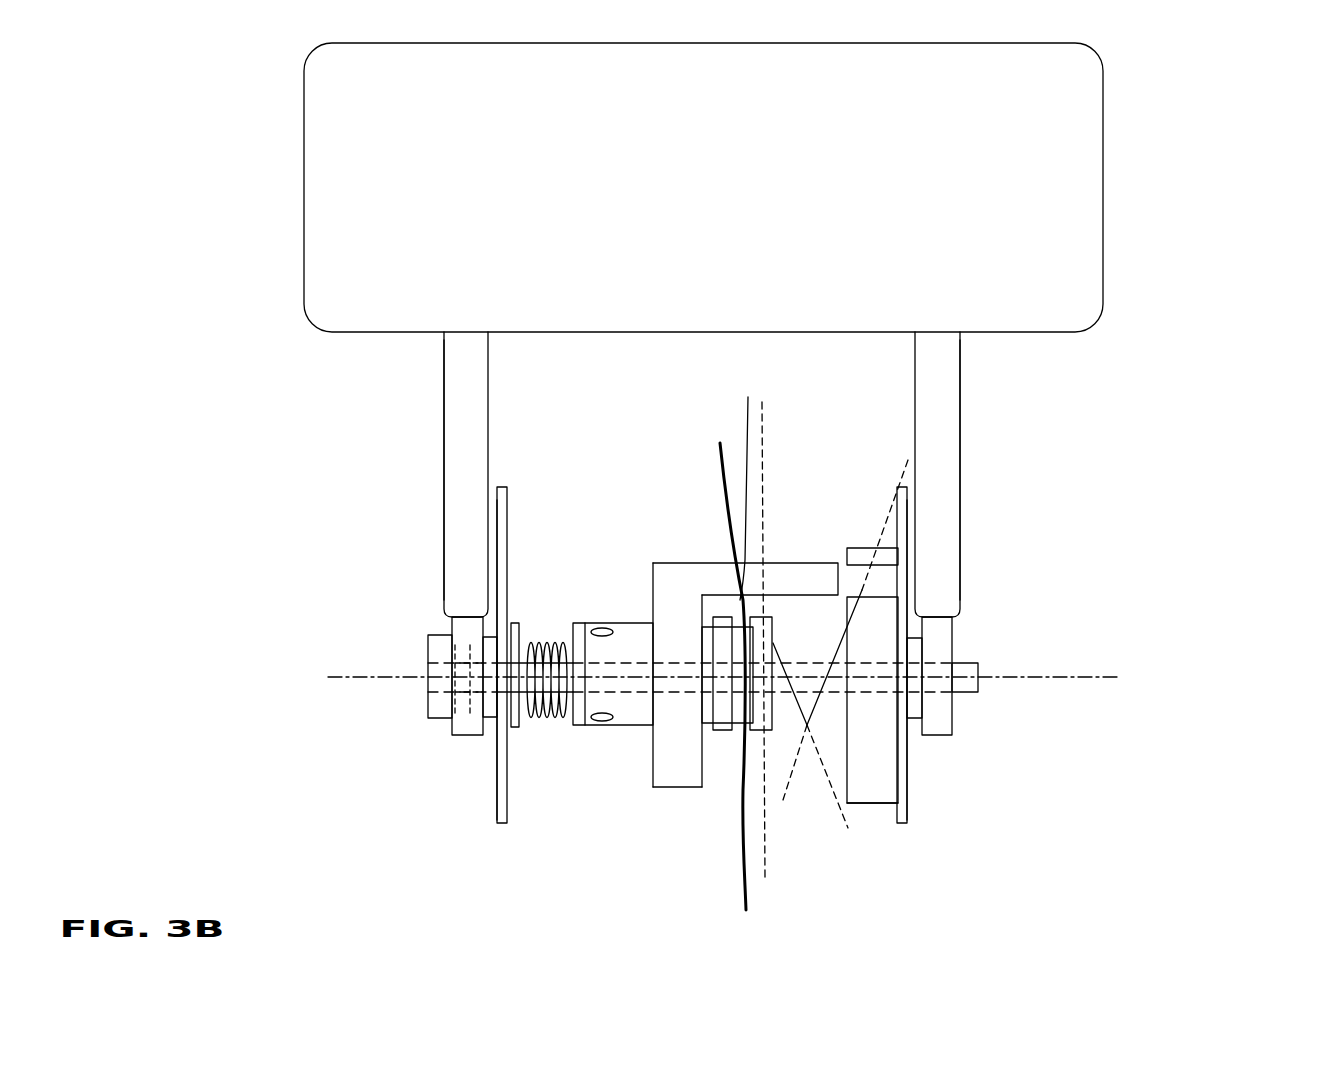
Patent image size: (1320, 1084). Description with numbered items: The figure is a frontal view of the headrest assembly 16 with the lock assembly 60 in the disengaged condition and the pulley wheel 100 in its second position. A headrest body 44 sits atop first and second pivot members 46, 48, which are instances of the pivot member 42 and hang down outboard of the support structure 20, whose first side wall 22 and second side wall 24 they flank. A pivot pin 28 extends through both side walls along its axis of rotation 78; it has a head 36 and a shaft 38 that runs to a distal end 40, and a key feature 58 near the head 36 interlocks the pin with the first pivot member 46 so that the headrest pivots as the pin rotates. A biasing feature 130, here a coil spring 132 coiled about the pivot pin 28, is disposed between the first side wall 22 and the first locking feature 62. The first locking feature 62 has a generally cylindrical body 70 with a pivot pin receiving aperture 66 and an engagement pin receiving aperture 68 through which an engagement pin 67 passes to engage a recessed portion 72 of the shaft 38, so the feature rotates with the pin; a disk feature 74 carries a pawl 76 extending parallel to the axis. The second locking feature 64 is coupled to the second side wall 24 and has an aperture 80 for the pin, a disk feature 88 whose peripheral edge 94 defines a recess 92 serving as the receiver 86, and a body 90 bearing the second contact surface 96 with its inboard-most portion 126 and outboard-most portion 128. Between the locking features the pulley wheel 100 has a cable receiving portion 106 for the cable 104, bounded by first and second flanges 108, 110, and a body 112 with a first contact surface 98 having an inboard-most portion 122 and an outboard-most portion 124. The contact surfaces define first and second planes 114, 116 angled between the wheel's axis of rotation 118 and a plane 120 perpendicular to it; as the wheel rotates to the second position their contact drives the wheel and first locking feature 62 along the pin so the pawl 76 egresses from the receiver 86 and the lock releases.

The headrest assembly 16 is at (1196, 129).
The support structure 20 is at (509, 487).
The first side wall 22 is at (497, 760).
The second side wall 24 is at (903, 770).
The pivot pin 28 is at (426, 706).
The head 36 is at (428, 648).
The shaft 38 is at (540, 640).
The distal end 40 is at (980, 685).
The pivot member 42 is at (438, 383).
The headrest body 44 is at (655, 203).
The first pivot member 46 is at (440, 430).
The second pivot member 48 is at (945, 410).
The key feature 58 is at (453, 718).
The lock assembly 60 is at (660, 794).
The first locking feature 62 is at (688, 764).
The second locking feature 64 is at (909, 788).
The pivot pin receiving aperture 66 is at (660, 738).
The engagement pin 67 is at (592, 625).
The engagement pin receiving aperture 68 is at (601, 628).
The body 70 is at (636, 623).
The recessed portion 72 is at (638, 727).
The disk feature 74 is at (688, 575).
The pawl 76 is at (806, 598).
The axis of rotation 78 is at (1050, 677).
The aperture 80 is at (866, 655).
The receiver 86 is at (893, 571).
The disk feature 88 is at (873, 728).
The body 90 is at (832, 708).
The recess 92 is at (885, 588).
The peripheral edge 94 is at (885, 617).
The second contact surface 96 is at (815, 640).
The first contact surface 98 is at (777, 578).
The pulley wheel 100 is at (724, 738).
The cable 104 is at (718, 575).
The cable receiving portion 106 is at (752, 744).
The first flange 108 is at (718, 614).
The second flange 110 is at (752, 623).
The body 112 is at (800, 745).
The first plane 114 is at (873, 799).
The second plane 116 is at (887, 508).
The axis of rotation 118 is at (1097, 680).
The plane 120 is at (765, 842).
The inboard-most portion 122 is at (780, 600).
The outboard-most portion 124 is at (818, 760).
The inboard-most portion 126 is at (820, 650).
The outboard-most portion 128 is at (905, 772).
The biasing feature 130 is at (558, 732).
The coil spring 132 is at (590, 724).